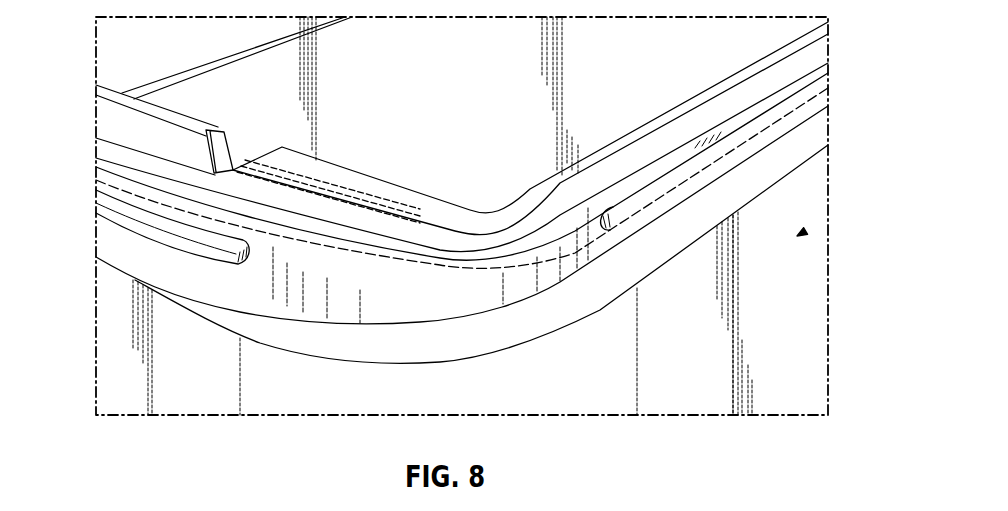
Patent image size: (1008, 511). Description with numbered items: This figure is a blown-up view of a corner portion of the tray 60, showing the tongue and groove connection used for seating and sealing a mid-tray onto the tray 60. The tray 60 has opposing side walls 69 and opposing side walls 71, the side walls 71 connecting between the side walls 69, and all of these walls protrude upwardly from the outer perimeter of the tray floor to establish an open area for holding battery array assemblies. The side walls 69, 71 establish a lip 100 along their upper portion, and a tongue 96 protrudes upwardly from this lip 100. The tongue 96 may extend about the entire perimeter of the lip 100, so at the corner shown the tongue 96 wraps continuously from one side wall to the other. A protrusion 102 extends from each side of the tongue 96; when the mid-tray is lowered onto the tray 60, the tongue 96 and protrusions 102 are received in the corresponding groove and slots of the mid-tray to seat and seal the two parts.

The tray 60 is at (803, 232).
The opposing side walls 69 is at (815, 377).
The opposing side walls 71 is at (118, 340).
The tongue 96 is at (502, 236).
The lip 100 is at (543, 315).
The protrusion 102 is at (717, 157).